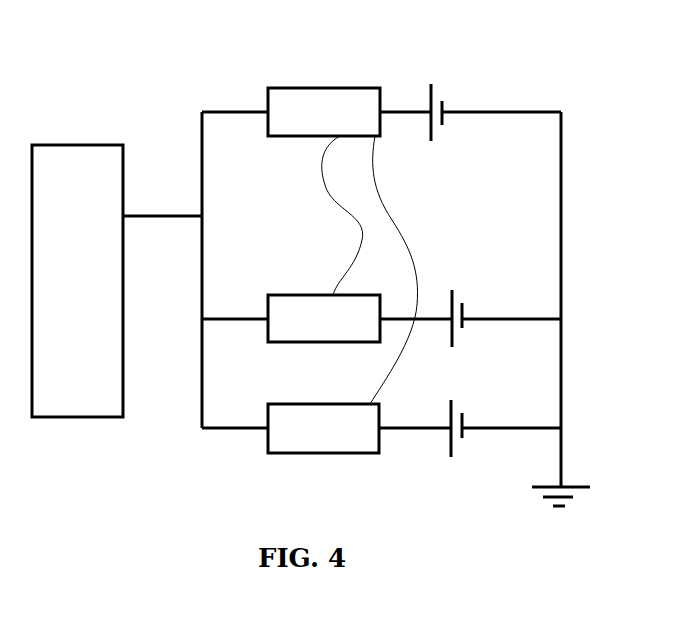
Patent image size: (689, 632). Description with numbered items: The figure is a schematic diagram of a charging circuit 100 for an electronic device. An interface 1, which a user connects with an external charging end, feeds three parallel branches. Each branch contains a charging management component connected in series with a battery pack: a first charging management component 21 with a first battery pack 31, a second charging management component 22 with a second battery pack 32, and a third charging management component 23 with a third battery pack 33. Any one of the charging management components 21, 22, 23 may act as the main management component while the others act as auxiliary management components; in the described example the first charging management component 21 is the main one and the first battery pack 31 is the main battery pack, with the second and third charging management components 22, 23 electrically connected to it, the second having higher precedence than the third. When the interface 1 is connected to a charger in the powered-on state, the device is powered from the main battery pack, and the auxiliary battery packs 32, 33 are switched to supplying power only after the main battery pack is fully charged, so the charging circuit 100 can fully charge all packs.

The charging circuit 100 is at (133, 68).
The interface 1 is at (108, 347).
The first charging management component 21 is at (302, 131).
The second charging management component 22 is at (309, 328).
The third charging management component 23 is at (328, 436).
The first battery pack 31 is at (443, 122).
The second battery pack 32 is at (463, 325).
The third battery pack 33 is at (463, 435).